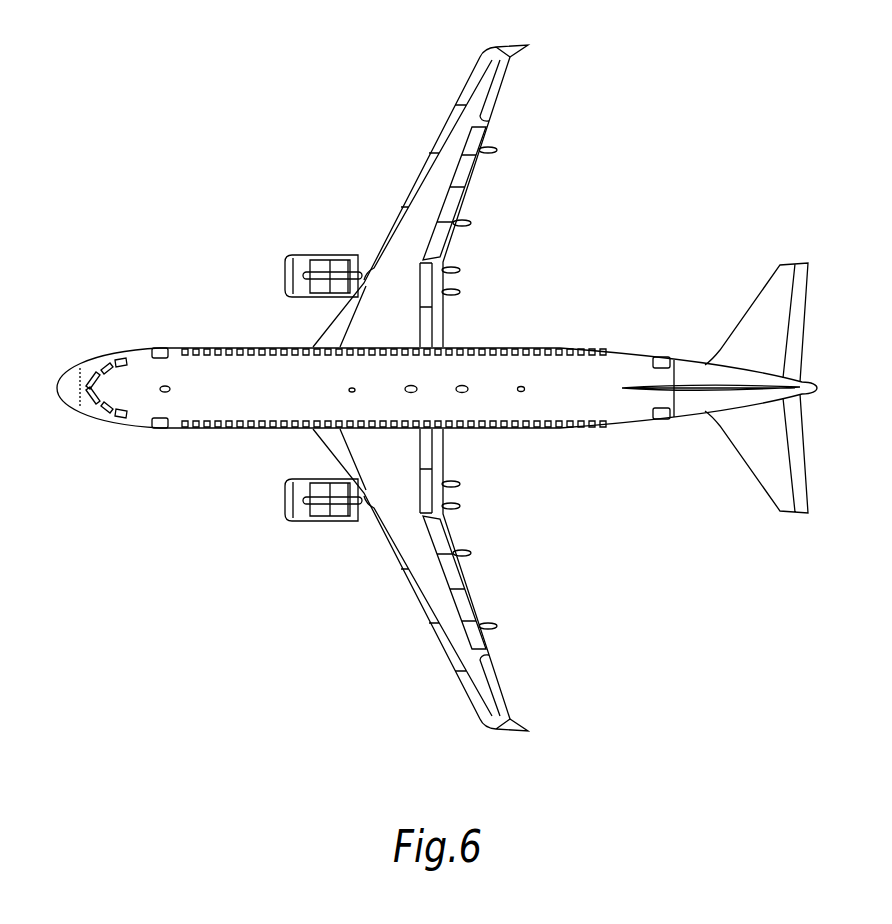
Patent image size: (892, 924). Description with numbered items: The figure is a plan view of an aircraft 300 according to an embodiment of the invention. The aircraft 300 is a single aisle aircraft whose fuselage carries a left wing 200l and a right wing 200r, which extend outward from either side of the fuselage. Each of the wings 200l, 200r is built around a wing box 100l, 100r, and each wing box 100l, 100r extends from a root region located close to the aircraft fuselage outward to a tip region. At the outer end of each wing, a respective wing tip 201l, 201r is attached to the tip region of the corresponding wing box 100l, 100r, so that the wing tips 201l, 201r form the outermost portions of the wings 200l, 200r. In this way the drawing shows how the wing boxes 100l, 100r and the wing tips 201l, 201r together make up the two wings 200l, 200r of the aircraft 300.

The aircraft 300 is at (182, 395).
The wing box 100r is at (443, 196).
The wing box 100l is at (434, 580).
The right wing 200r is at (398, 222).
The left wing 200l is at (427, 583).
The wing tip 201r is at (502, 70).
The wing tip 201l is at (493, 720).